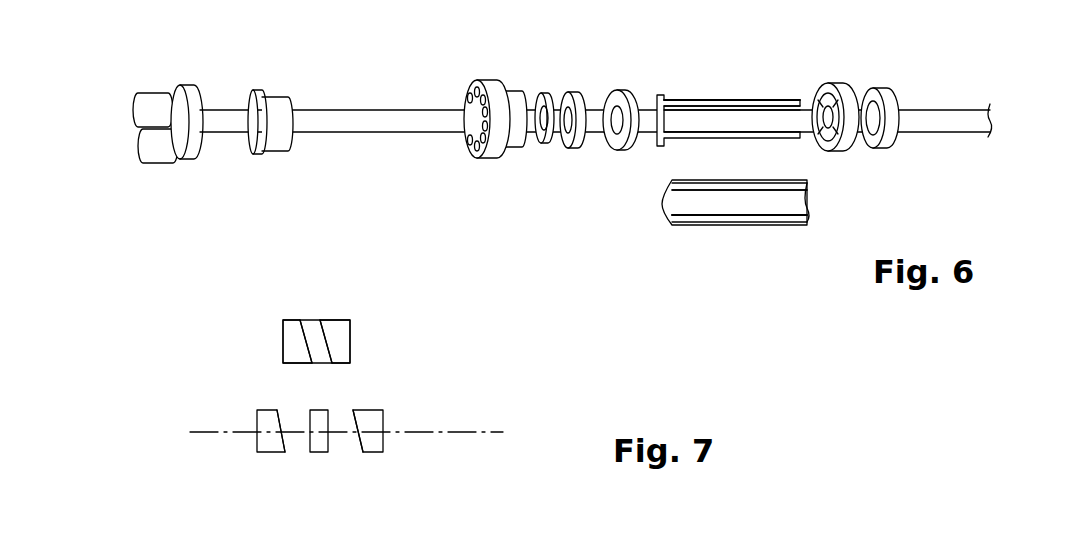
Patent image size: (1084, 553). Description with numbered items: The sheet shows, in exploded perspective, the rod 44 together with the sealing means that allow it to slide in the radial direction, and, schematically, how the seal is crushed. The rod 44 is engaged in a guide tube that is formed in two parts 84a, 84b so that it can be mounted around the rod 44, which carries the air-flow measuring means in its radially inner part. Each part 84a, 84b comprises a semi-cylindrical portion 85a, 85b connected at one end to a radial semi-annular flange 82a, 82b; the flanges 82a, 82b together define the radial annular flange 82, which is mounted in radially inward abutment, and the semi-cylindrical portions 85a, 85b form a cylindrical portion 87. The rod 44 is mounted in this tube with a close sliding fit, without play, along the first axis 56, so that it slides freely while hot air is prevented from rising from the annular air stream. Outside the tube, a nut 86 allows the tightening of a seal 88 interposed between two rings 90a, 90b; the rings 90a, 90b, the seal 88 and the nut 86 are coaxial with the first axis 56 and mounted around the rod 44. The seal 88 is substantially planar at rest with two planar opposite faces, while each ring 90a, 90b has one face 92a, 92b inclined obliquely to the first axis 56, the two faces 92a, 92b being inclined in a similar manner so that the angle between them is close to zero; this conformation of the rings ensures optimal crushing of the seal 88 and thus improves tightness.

In FIG. 6, the rod 44 is at (940, 110).
In FIG. 7, the first axis 56 is at (470, 432).
In FIG. 6, the radial annular flange 82 is at (705, 154).
In FIG. 6, the radial semi-annular flange 82a is at (735, 75).
In FIG. 6, the radial semi-annular flange 82b is at (699, 241).
In FIG. 6, the first part of the guide tube 84a is at (730, 222).
In FIG. 6, the second part of the guide tube 84b is at (745, 98).
In FIG. 6, the semi-cylindrical portion 85a is at (792, 99).
In FIG. 6, the semi-cylindrical portion 85b is at (688, 215).
In FIG. 6, the nut 86 is at (490, 80).
In FIG. 6, the cylindrical portion 87 is at (810, 148).
In FIG. 6, the seal 88 is at (570, 92).
In FIG. 7, the seal 88 is at (312, 330).
In FIG. 6, the first ring 90a is at (536, 145).
In FIG. 7, the first ring 90a is at (288, 328).
In FIG. 6, the second ring 90b is at (618, 90).
In FIG. 7, the second ring 90b is at (336, 325).
In FIG. 7, the inclined face 92a is at (280, 412).
In FIG. 7, the inclined face 92b is at (360, 430).